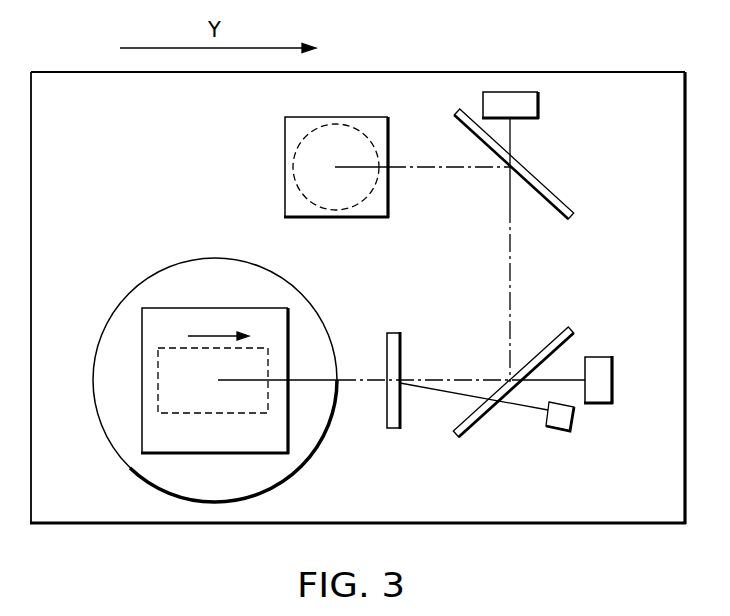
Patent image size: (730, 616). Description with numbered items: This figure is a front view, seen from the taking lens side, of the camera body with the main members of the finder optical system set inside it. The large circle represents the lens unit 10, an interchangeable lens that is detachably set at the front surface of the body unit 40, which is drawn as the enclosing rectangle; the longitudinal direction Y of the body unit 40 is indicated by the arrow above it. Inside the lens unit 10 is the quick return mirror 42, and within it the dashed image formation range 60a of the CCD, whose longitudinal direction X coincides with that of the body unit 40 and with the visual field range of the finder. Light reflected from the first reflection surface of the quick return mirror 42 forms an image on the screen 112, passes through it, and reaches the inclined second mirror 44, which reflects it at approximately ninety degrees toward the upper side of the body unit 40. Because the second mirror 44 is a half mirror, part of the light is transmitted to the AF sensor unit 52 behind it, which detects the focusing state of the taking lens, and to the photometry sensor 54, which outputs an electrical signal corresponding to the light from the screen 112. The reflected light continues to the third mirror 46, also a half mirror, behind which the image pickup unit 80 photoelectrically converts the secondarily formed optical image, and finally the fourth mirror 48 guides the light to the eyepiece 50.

The lens unit 10 is at (311, 457).
The body unit 40 is at (585, 524).
The quick return mirror 42 is at (176, 308).
The second mirror 44 is at (478, 428).
The third mirror 46 is at (545, 183).
The fourth mirror 48 is at (285, 127).
The eyepiece 50 is at (294, 192).
The AF sensor unit 52 is at (613, 380).
The photometry sensor 54 is at (556, 428).
The image formation range 60a is at (185, 414).
The image pickup unit 80 is at (540, 98).
The screen 112 is at (393, 330).